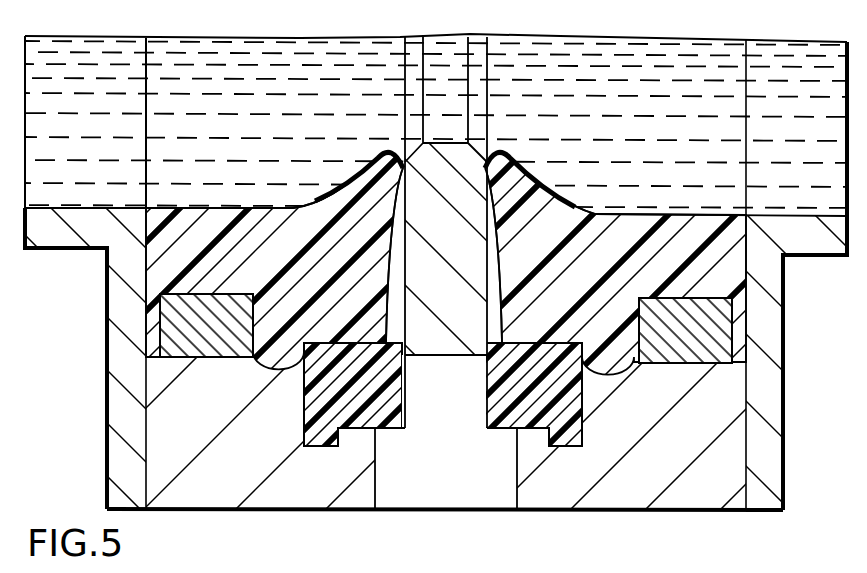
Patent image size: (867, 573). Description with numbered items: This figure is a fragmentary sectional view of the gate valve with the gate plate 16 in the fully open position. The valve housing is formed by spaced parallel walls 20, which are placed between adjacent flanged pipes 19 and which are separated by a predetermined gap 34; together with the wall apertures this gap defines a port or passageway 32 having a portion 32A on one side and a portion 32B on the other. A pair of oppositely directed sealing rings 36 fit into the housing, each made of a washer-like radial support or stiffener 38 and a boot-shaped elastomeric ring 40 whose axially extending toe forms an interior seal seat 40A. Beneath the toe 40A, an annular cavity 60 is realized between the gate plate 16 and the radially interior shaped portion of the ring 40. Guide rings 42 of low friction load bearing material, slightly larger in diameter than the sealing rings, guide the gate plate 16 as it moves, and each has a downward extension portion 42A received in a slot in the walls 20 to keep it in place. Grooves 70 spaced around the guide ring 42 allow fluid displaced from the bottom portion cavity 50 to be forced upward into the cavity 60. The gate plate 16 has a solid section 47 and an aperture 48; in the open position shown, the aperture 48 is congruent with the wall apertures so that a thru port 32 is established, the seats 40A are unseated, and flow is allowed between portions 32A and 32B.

The gate plate 16 is at (460, 362).
The flanged pipes 19 is at (120, 452).
The housing walls 20 is at (265, 480).
The port or passageway 32 is at (300, 53).
The port portion 32A is at (236, 50).
The port portion 32B is at (647, 53).
The gap between the walls 34 is at (486, 70).
The sealing rings or sleeves 36 is at (260, 190).
The radial support or stiffener 38 is at (175, 313).
The elastomeric ring 40 is at (160, 262).
The interior seal seat (toe) 40A is at (374, 158).
The guide ring 42 is at (365, 399).
The downward extension portion 42A is at (330, 447).
The solid section 47 is at (460, 290).
The aperture 48 is at (468, 106).
The bottom portion cavity 50 is at (490, 498).
The annular cavity 60 is at (500, 282).
The grooves 70 is at (389, 433).